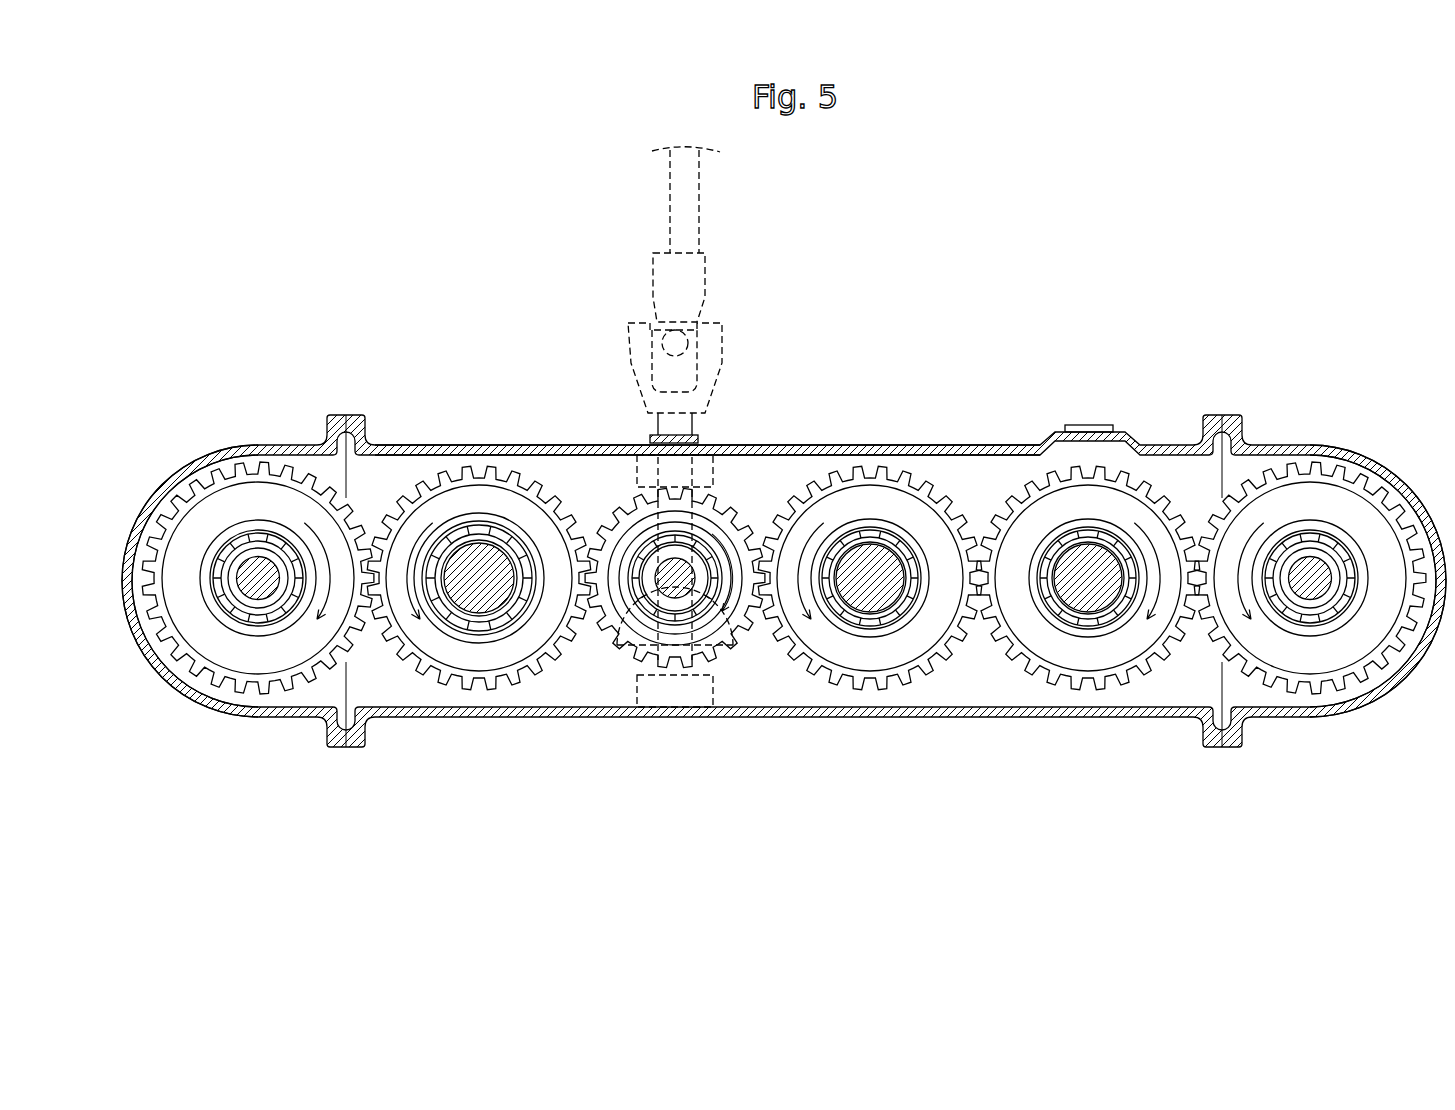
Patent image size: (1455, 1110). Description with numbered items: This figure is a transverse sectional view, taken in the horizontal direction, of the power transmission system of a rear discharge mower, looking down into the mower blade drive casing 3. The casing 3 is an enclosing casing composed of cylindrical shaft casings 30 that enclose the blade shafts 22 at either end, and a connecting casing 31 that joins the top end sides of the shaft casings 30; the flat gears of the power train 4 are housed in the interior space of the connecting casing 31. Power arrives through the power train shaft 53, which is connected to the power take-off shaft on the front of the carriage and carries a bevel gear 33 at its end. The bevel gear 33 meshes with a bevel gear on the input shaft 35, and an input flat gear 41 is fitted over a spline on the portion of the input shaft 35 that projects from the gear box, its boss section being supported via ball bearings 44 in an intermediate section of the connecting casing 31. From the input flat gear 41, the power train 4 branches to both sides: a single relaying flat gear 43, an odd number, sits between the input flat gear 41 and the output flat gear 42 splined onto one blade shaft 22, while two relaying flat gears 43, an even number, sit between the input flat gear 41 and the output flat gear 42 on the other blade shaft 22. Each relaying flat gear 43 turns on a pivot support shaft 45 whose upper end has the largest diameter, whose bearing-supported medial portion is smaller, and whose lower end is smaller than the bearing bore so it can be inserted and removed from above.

The mower blade drive casing 3 is at (985, 433).
The power train 4 is at (784, 566).
The blade shaft 22 is at (240, 565).
The cylindrical shaft casing 30 is at (212, 456).
The connecting casing 31 is at (482, 445).
The bevel gear 33 is at (713, 617).
The input shaft 35 is at (647, 582).
The input flat gear 41 is at (618, 522).
The output flat gear 42 is at (252, 655).
The relaying flat gear 43 is at (472, 662).
The ball bearing 44 is at (263, 522).
The pivot support shaft 45 is at (445, 543).
The power train shaft 53 is at (717, 375).